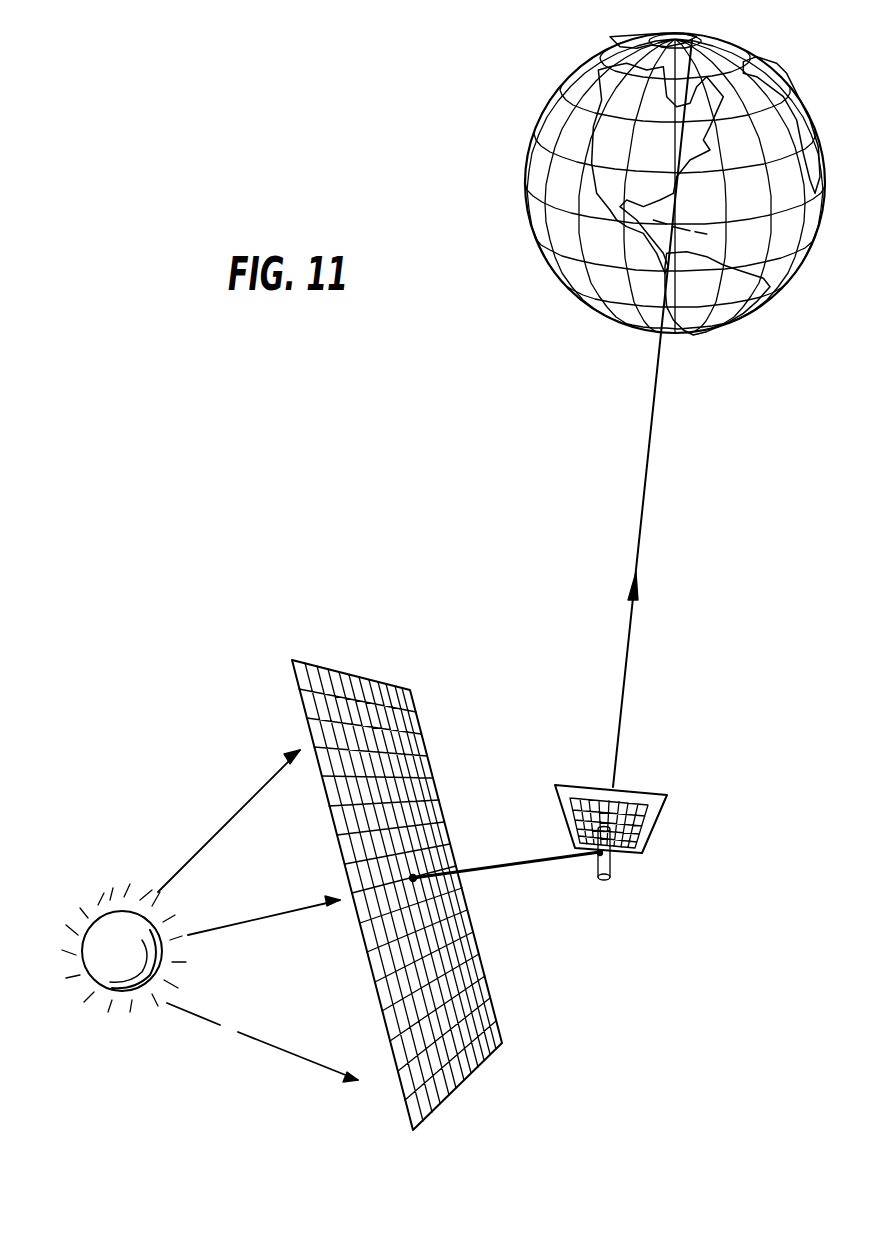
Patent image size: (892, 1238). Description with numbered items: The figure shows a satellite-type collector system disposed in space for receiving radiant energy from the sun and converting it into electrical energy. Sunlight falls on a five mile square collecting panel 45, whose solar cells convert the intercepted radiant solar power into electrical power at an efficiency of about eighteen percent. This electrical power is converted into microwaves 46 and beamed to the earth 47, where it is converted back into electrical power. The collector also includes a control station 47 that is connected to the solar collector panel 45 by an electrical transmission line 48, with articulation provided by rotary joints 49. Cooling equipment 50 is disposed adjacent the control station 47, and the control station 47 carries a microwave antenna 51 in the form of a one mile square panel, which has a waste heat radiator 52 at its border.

The solar collecting panel 45 is at (380, 680).
The microwaves 46 is at (642, 535).
The earth / control station 47 is at (607, 300).
The electrical transmission line 48 is at (487, 863).
The rotary joints 49 is at (420, 880).
The cooling equipment 50 is at (608, 872).
The microwave antenna 51 is at (630, 818).
The waste heat radiator 52 is at (642, 792).